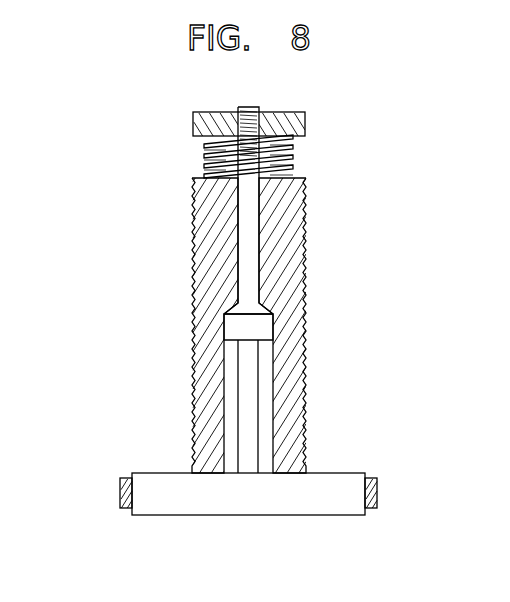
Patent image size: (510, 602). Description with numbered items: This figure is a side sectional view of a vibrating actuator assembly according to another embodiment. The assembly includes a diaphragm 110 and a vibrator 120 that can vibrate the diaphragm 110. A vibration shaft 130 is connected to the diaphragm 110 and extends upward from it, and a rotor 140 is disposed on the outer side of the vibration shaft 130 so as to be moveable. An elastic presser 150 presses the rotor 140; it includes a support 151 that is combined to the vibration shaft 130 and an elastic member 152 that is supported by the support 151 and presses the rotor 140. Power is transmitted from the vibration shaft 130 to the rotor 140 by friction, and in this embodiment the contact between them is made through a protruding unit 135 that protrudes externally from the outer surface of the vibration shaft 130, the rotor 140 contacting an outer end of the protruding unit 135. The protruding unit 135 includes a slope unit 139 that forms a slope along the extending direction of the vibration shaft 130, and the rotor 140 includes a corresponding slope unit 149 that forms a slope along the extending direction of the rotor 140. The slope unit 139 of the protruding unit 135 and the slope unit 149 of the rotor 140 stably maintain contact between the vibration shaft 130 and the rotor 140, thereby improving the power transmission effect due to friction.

The diaphragm 110 is at (160, 509).
The vibrator 120 is at (120, 492).
The vibration shaft 130 is at (258, 455).
The protruding unit 135 is at (273, 327).
The slope unit 139 is at (240, 314).
The rotor 140 is at (306, 230).
The slope unit 149 is at (263, 301).
The elastic presser 150 is at (326, 143).
The support 151 is at (305, 124).
The elastic member 152 is at (293, 170).